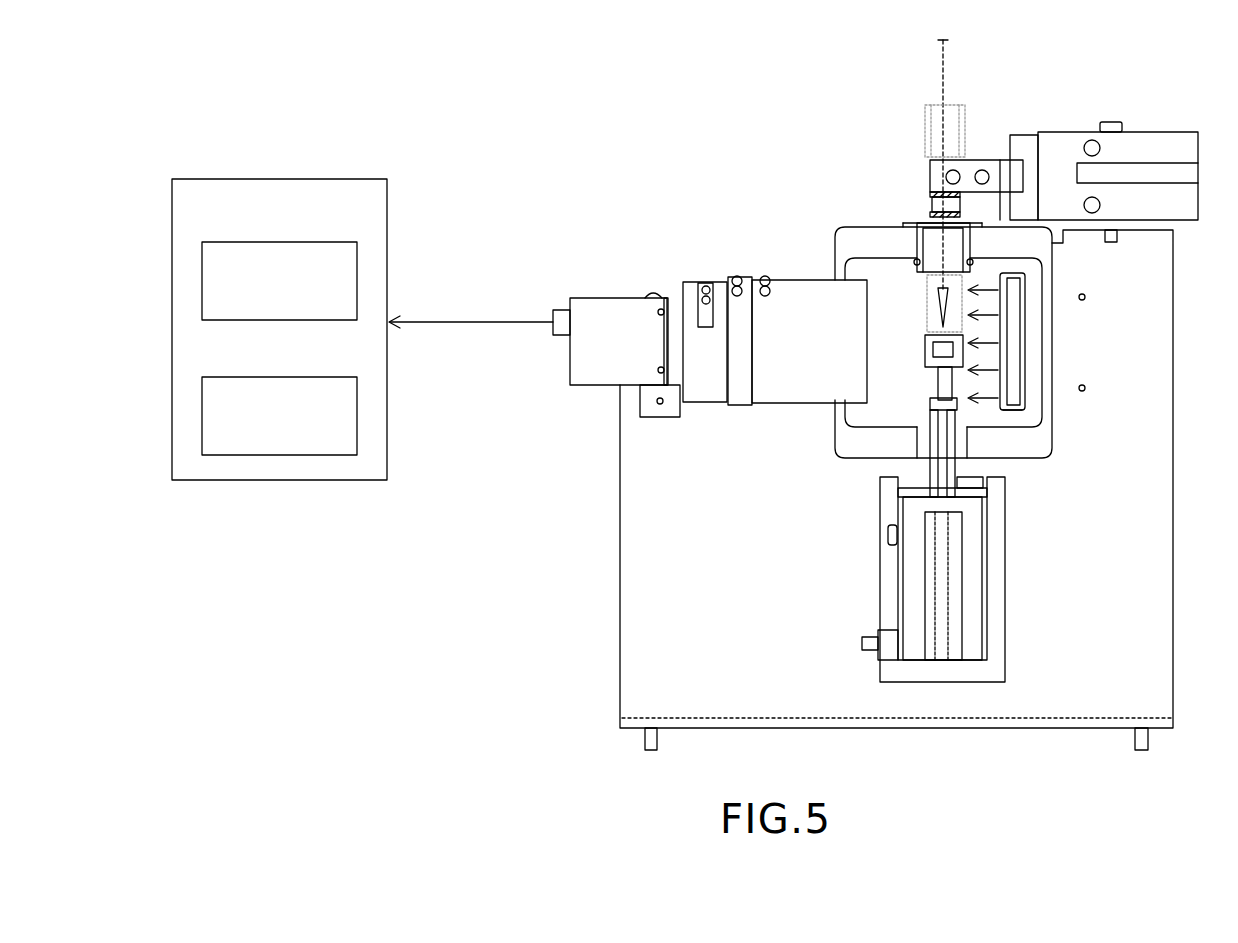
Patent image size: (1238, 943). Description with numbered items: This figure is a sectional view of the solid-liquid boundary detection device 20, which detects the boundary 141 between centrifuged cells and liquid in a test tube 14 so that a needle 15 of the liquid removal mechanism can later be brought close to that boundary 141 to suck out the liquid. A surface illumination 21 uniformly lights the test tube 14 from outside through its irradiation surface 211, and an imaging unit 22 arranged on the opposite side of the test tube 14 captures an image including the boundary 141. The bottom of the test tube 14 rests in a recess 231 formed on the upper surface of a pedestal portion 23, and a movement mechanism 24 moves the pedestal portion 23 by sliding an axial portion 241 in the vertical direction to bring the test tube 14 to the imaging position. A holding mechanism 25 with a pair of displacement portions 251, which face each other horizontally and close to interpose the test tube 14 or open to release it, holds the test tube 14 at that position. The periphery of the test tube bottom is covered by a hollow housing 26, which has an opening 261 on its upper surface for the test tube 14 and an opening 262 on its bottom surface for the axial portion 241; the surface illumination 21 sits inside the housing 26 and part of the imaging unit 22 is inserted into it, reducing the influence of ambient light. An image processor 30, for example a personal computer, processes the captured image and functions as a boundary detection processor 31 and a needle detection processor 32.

The test tube 14 is at (927, 156).
The needle 15 is at (953, 42).
The solid-liquid boundary detection device 20 is at (758, 111).
The surface illumination 21 is at (1023, 327).
The irradiation surface 211 is at (1000, 410).
The imaging unit 22 is at (768, 402).
The pedestal portion 23 is at (935, 372).
The recess 231 is at (925, 344).
The movement mechanism 24 is at (941, 571).
The axial portion 241 is at (933, 466).
The holding mechanism 25 is at (1157, 130).
The displacement portions 251 is at (980, 160).
The housing 26 is at (835, 236).
The opening 261 is at (920, 242).
The opening 262 is at (960, 447).
The image processor 30 is at (345, 179).
The boundary detection processor 31 is at (343, 242).
The needle detection processor 32 is at (343, 377).
The boundary 141 is at (930, 326).